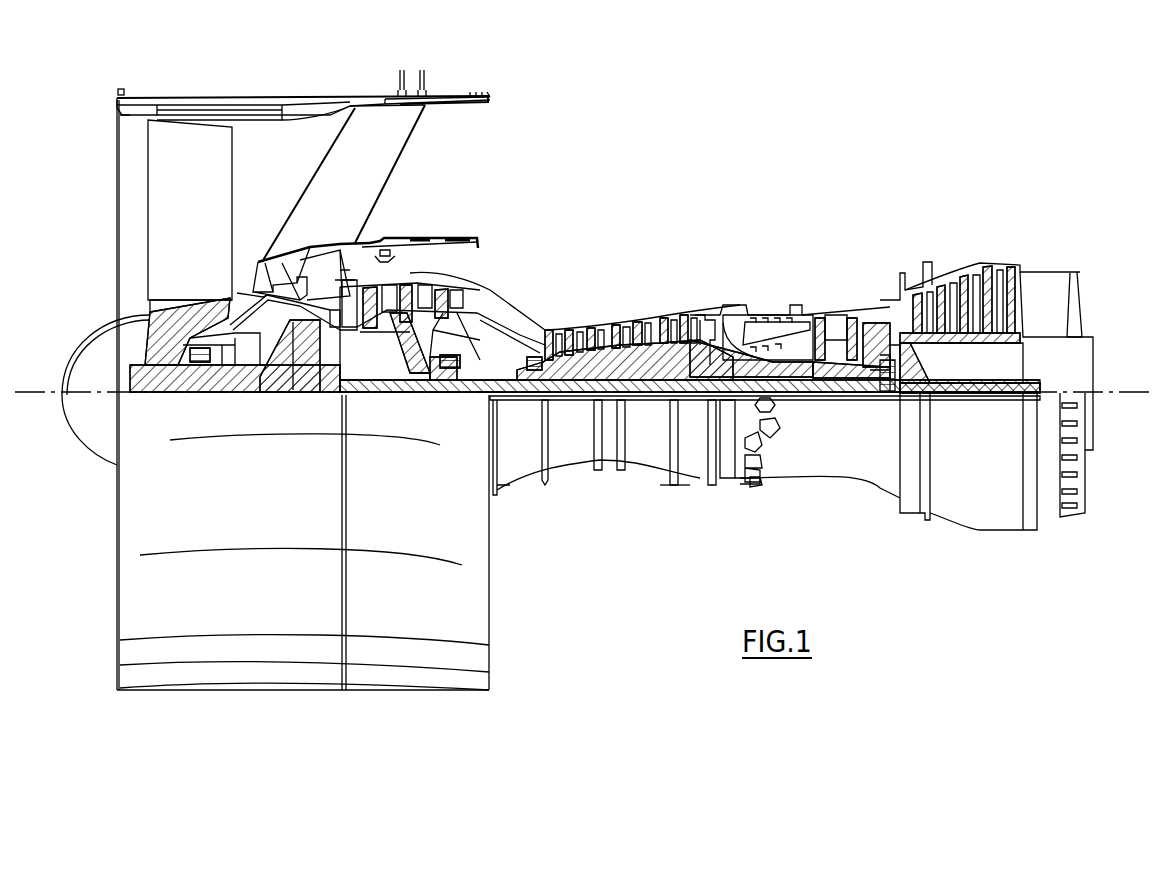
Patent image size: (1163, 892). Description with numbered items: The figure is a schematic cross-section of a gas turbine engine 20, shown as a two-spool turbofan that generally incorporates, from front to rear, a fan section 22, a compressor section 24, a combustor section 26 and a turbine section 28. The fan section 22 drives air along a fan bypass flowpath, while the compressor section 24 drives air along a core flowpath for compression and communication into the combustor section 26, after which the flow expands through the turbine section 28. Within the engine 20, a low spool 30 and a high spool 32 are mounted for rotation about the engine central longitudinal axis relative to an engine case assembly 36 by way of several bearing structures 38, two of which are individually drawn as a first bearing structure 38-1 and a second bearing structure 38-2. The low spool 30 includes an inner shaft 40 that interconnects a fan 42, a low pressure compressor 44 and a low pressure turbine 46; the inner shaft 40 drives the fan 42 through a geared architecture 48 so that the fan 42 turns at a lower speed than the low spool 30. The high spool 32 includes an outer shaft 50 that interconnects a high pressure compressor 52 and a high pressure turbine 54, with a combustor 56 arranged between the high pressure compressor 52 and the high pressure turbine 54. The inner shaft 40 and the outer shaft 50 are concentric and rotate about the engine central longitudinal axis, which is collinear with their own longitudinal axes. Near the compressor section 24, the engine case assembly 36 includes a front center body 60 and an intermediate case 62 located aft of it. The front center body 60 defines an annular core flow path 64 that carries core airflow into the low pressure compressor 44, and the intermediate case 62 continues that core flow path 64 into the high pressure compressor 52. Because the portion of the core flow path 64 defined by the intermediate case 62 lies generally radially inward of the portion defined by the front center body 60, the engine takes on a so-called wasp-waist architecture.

The gas turbine engine 20 is at (830, 113).
The fan section 22 is at (345, 55).
The compressor section 24 is at (357, 205).
The combustor section 26 is at (818, 205).
The turbine section 28 is at (1030, 205).
The low spool 30 is at (652, 408).
The high spool 32 is at (690, 370).
The engine case assembly 36 is at (692, 495).
The bearing structures 38 is at (880, 392).
The bearing structure 38-1 is at (200, 370).
The bearing structure 38-2 is at (448, 378).
The inner shaft 40 is at (515, 400).
The fan 42 is at (202, 234).
The low pressure compressor 44 is at (420, 288).
The low pressure turbine 46 is at (968, 300).
The geared architecture 48 is at (310, 380).
The outer shaft 50 is at (770, 390).
The high pressure compressor 52 is at (623, 357).
The high pressure turbine 54 is at (830, 310).
The combustor 56 is at (768, 335).
The front center body 60 is at (312, 262).
The intermediate case 62 is at (352, 105).
The core flow path 64 is at (422, 238).